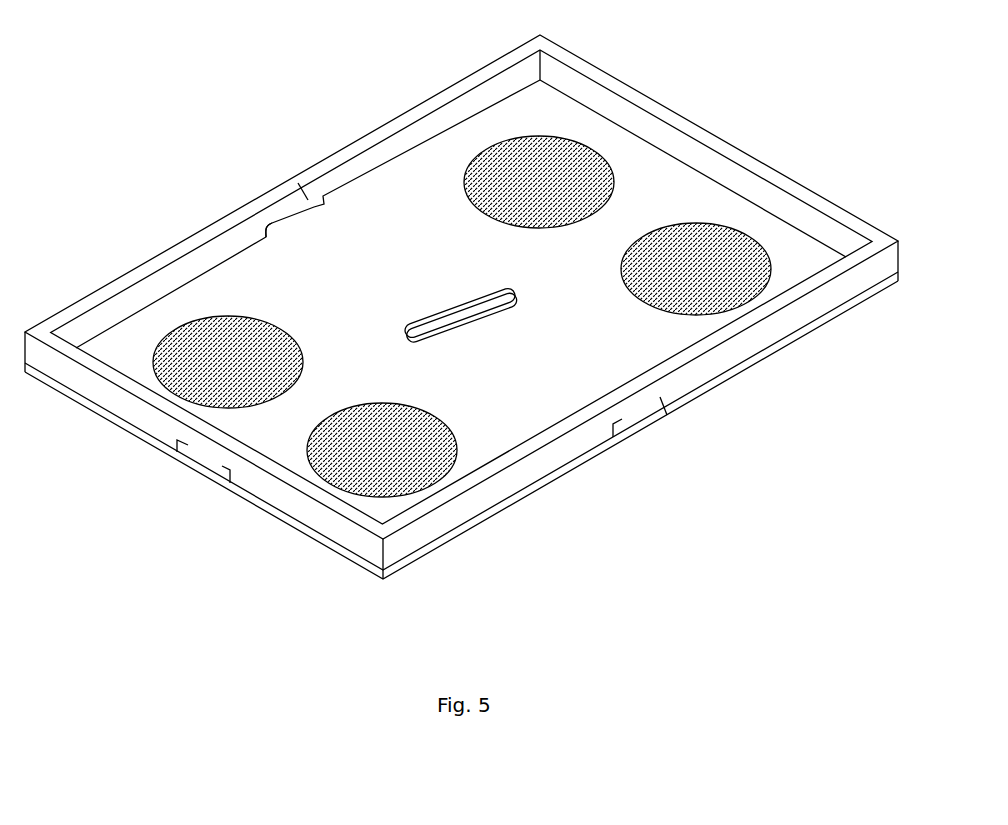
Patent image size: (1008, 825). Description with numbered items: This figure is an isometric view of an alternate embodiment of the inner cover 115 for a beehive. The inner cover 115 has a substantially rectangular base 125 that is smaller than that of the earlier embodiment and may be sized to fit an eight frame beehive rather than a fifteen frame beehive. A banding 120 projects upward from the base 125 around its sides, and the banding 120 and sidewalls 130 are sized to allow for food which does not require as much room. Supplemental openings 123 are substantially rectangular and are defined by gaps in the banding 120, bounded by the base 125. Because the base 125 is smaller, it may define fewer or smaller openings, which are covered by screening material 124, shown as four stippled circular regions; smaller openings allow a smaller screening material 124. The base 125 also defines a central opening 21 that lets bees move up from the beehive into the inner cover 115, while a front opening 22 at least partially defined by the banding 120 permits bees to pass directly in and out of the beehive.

The inner cover 115 is at (461, 303).
The banding 120 is at (687, 120).
The supplemental openings 123 is at (293, 180).
The screening material 124 is at (732, 233).
The base 125 is at (283, 265).
The sidewalls 130 is at (805, 334).
The central opening 21 is at (473, 327).
The front opening 22 is at (197, 462).